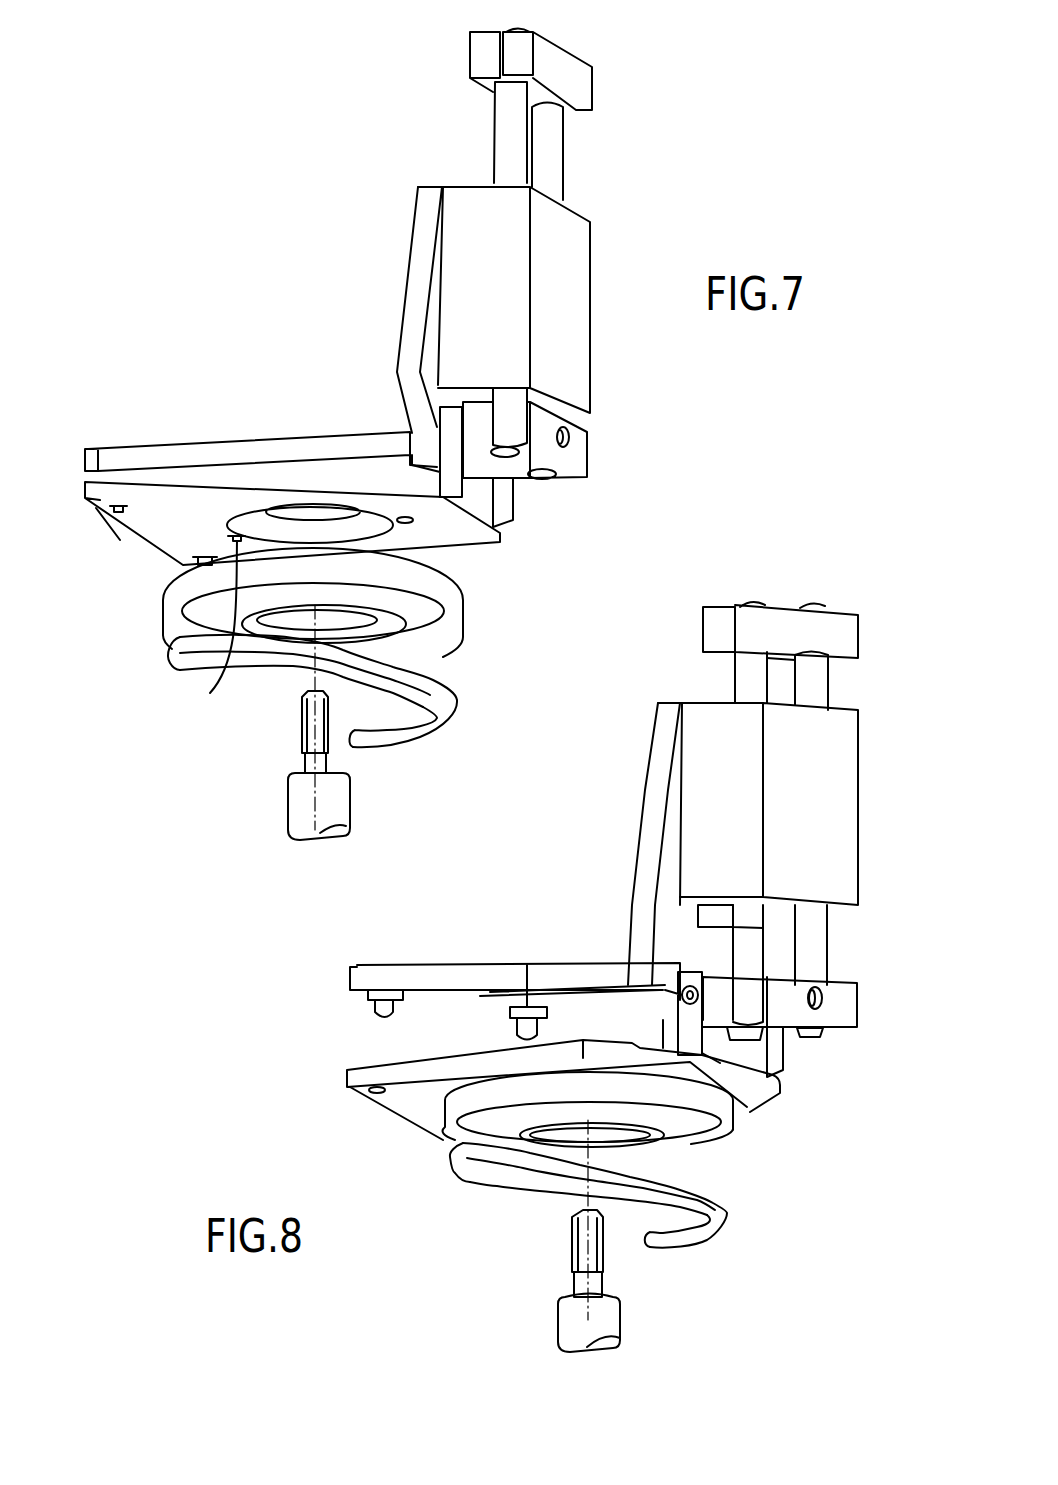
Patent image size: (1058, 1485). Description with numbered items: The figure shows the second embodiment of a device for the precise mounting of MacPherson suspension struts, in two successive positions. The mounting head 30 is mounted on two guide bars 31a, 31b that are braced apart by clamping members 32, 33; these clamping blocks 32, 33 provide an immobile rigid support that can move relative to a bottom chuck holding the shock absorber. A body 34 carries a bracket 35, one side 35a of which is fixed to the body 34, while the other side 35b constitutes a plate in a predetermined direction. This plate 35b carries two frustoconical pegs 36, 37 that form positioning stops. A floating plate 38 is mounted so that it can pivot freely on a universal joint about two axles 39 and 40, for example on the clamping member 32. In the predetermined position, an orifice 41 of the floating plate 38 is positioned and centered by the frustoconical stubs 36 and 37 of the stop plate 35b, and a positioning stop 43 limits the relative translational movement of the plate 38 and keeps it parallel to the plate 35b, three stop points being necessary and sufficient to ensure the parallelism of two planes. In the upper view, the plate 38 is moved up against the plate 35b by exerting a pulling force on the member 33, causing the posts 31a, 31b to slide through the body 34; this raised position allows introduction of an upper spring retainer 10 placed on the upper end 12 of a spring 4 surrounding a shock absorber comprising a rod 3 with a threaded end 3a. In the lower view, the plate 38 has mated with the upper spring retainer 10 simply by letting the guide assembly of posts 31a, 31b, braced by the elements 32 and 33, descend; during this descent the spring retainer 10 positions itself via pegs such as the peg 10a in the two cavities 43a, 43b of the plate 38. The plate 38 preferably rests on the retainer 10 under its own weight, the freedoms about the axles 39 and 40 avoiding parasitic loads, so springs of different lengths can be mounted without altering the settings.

In FIG. 7, the rod 3 is at (298, 812).
In FIG. 8, the rod 3 is at (570, 1325).
In FIG. 7, the threaded end 3a is at (305, 722).
In FIG. 8, the threaded end 3a is at (580, 1243).
In FIG. 7, the spring 4 is at (450, 700).
In FIG. 8, the spring 4 is at (728, 1215).
In FIG. 7, the upper spring retainer 10 is at (455, 600).
In FIG. 8, the upper spring retainer 10 is at (720, 1108).
In FIG. 7, the peg 10a is at (448, 567).
In FIG. 7, the upper end 12 is at (440, 638).
In FIG. 8, the upper end 12 is at (715, 1138).
In FIG. 7, the mounting head 30 is at (425, 158).
In FIG. 8, the mounting head 30 is at (690, 675).
In FIG. 7, the guide bar 31a is at (512, 112).
In FIG. 8, the guide bar 31a is at (752, 680).
In FIG. 7, the guide bar 31b is at (530, 160).
In FIG. 8, the guide bar 31b is at (815, 670).
In FIG. 7, the clamping member 32 is at (578, 455).
In FIG. 8, the clamping member 32 is at (830, 1020).
In FIG. 7, the clamping member 33 is at (571, 72).
In FIG. 8, the clamping member 33 is at (840, 622).
In FIG. 7, the body 34 is at (570, 268).
In FIG. 8, the body 34 is at (835, 770).
In FIG. 7, the bracket 35 is at (367, 365).
In FIG. 8, the bracket 35 is at (628, 882).
In FIG. 7, the side 35a is at (418, 275).
In FIG. 8, the side 35a is at (665, 808).
In FIG. 7, the plate 35b is at (230, 448).
In FIG. 8, the plate 35b is at (432, 968).
In FIG. 7, the frustoconical peg 36 is at (118, 510).
In FIG. 8, the frustoconical peg 36 is at (375, 1012).
In FIG. 7, the frustoconical peg 37 is at (195, 562).
In FIG. 8, the frustoconical peg 37 is at (500, 1000).
In FIG. 7, the floating plate 38 is at (155, 525).
In FIG. 8, the floating plate 38 is at (420, 1095).
In FIG. 7, the axle 39 is at (570, 437).
In FIG. 8, the axle 39 is at (825, 990).
In FIG. 7, the axle 40 is at (440, 428).
In FIG. 8, the axle 40 is at (678, 992).
In FIG. 8, the orifice 41 is at (372, 1092).
In FIG. 8, the positioning stop 43 is at (740, 912).
In FIG. 7, the cavity 43a is at (405, 518).
In FIG. 7, the cavity 43b is at (205, 624).